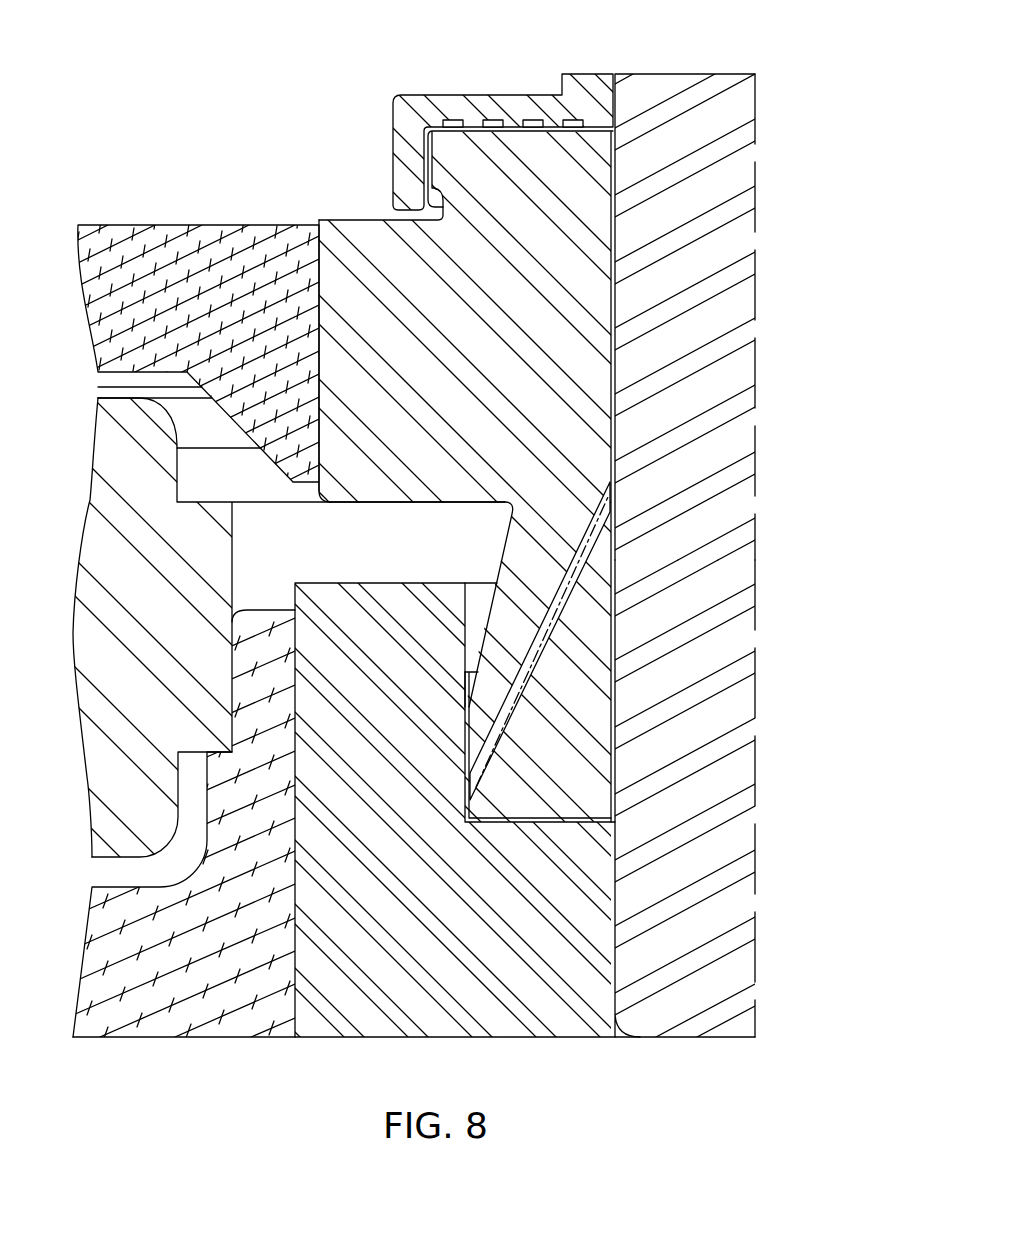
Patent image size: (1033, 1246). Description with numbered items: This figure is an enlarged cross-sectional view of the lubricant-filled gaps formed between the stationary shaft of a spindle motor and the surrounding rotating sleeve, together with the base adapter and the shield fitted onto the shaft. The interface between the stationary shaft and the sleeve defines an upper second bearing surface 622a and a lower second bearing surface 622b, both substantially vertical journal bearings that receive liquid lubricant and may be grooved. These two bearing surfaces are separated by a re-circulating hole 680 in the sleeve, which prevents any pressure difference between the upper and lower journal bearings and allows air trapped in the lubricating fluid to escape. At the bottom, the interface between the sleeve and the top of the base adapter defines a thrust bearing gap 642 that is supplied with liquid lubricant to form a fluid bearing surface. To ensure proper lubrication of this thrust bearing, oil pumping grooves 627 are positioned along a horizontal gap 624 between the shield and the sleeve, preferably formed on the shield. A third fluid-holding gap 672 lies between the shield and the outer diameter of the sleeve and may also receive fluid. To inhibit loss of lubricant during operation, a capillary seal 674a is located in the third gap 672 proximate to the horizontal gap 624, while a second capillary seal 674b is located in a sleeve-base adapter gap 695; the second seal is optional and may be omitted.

The upper second bearing surface 622a is at (617, 267).
The lower second bearing surface 622b is at (617, 748).
The horizontal gap 624 is at (593, 122).
The oil pumping grooves 627 is at (490, 118).
The thrust bearing gap 642 is at (563, 822).
The third fluid-holding gap 672 is at (424, 157).
The capillary seal 674a is at (422, 207).
The second capillary seal 674b is at (475, 672).
The re-circulating hole 680 is at (545, 678).
The sleeve-base adapter gap 695 is at (467, 686).